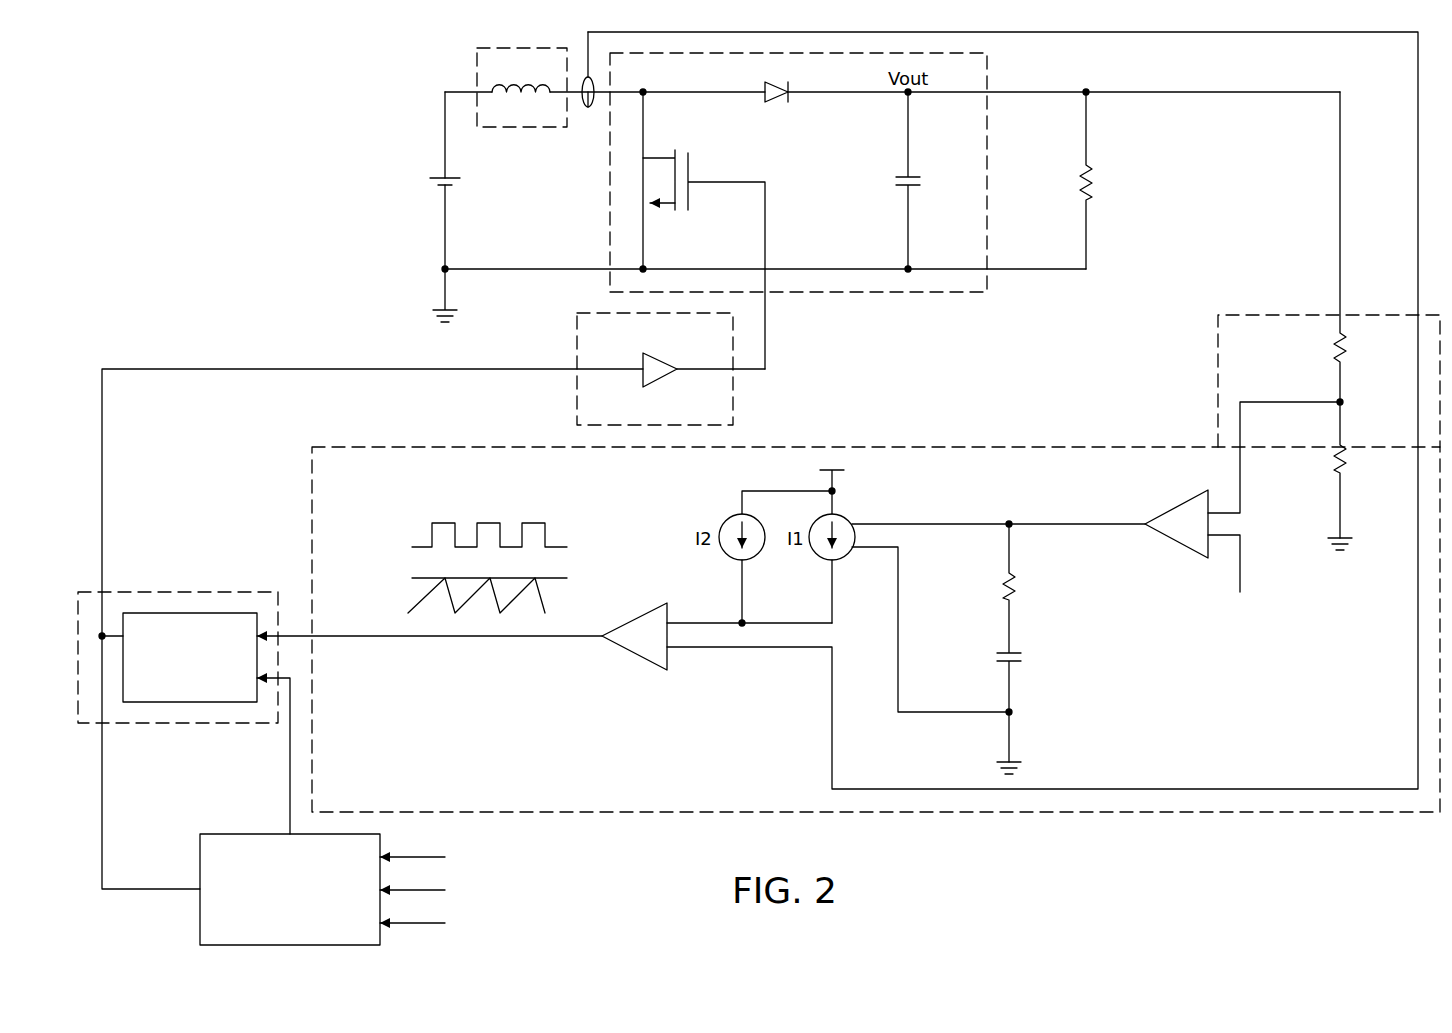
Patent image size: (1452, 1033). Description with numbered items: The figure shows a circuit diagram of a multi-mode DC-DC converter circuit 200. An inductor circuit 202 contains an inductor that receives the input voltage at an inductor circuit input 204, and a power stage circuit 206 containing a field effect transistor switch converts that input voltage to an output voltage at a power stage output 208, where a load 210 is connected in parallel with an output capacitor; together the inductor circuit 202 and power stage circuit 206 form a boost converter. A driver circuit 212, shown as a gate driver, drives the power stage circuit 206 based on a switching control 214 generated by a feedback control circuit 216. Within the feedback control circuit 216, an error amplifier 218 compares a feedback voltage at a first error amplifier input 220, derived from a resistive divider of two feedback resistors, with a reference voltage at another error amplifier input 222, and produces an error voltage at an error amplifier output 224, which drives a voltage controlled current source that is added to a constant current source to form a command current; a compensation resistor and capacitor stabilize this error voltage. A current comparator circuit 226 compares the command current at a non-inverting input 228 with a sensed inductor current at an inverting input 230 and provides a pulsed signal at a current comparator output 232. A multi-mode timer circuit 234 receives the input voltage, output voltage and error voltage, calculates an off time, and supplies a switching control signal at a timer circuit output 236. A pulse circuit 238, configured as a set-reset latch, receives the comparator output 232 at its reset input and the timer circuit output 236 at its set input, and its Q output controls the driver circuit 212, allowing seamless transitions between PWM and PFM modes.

The converter circuit 200 is at (222, 112).
The inductor circuit 202 is at (477, 70).
The inductor circuit input 204 is at (445, 137).
The power stage circuit 206 is at (610, 178).
The power stage output 208 is at (940, 97).
The load 210 is at (1080, 178).
The driver circuit 212 is at (577, 340).
The switching control 214 is at (228, 369).
The feedback control circuit 216 is at (312, 505).
The error amplifier 218 is at (1172, 547).
The first error amplifier input 220 is at (1290, 400).
The error amplifier input 222 is at (1243, 565).
The error amplifier output 224 is at (988, 520).
The current comparator circuit 226 is at (638, 615).
The non-inverting input 228 is at (686, 620).
The inverting input 230 is at (1068, 788).
The current comparator output 232 is at (395, 640).
The multi-mode timer circuit 234 is at (200, 912).
The timer circuit output 236 is at (290, 755).
The pulse circuit 238 is at (162, 590).